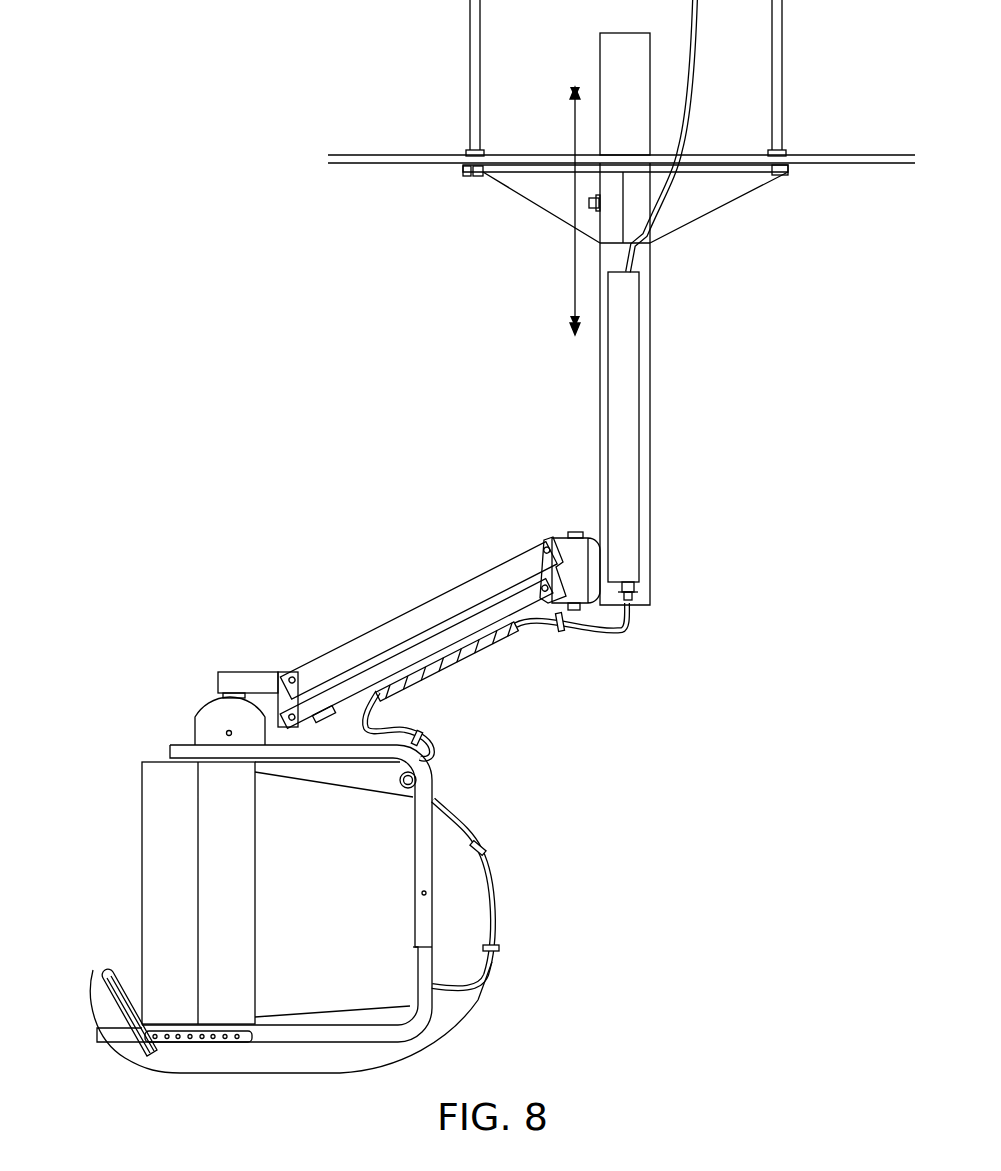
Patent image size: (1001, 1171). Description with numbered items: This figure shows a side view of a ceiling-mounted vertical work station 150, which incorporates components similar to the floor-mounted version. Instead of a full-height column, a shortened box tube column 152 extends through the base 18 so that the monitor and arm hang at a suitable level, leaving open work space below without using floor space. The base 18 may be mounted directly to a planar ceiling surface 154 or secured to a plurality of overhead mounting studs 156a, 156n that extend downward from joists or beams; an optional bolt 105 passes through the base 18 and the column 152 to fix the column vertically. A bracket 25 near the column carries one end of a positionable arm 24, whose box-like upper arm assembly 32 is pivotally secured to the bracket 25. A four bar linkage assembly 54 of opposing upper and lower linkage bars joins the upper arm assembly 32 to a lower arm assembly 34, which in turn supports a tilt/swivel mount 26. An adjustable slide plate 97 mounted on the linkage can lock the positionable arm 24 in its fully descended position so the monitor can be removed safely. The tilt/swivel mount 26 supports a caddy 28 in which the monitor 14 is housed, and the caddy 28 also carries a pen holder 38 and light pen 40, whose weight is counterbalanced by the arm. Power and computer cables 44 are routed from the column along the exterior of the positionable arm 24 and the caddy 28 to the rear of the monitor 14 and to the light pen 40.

The vertical work station 150 is at (158, 186).
The overhead mounting stud 156a is at (475, 58).
The overhead mounting stud 156n is at (782, 57).
The planar ceiling surface 154 is at (843, 158).
The bolt 105 is at (590, 203).
The base 18 is at (687, 200).
The shortened box tube column 152 is at (642, 328).
The bracket 25 is at (596, 538).
The upper arm assembly 32 is at (540, 527).
The positionable arm 24 is at (405, 610).
The four bar linkage assembly 54 is at (423, 582).
The lower arm assembly 34 is at (261, 640).
The tilt/swivel mount 26 is at (210, 707).
The adjustable slide plate 97 is at (320, 718).
The caddy 28 is at (423, 792).
The computer cables 44 is at (467, 832).
The monitor 14 is at (317, 906).
The light pen 40 is at (108, 972).
The pen holder 38 is at (146, 1062).